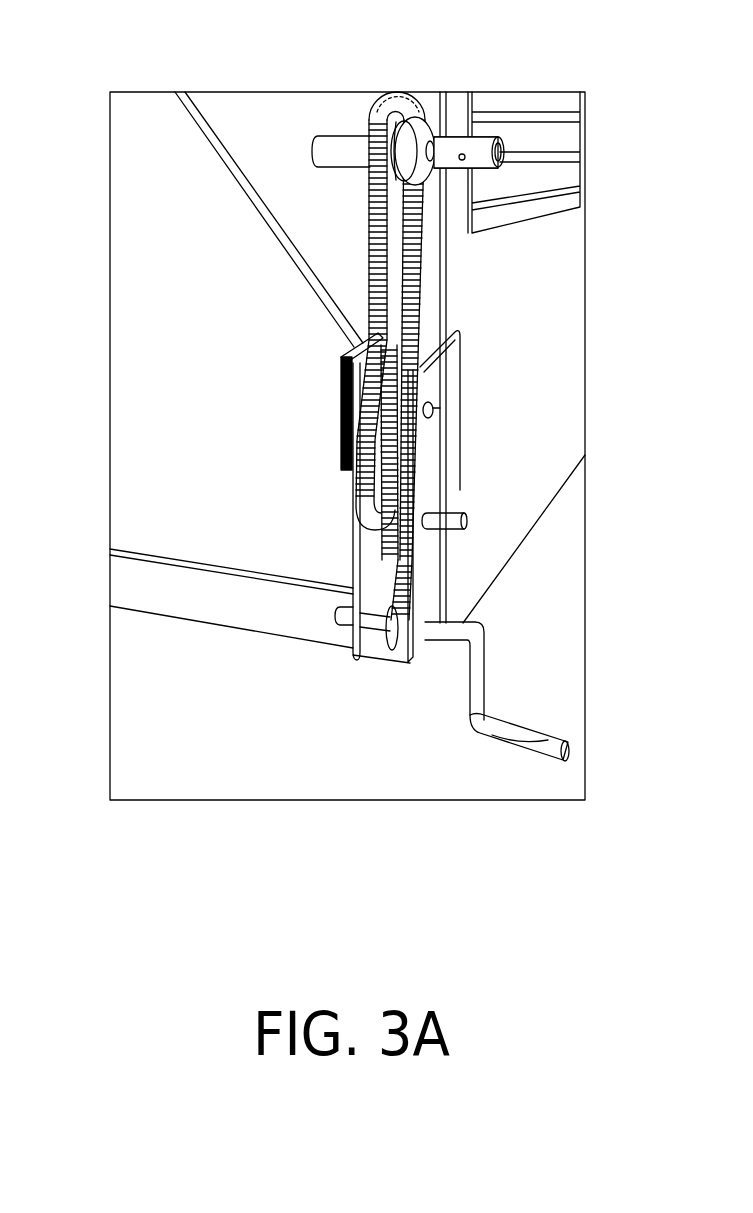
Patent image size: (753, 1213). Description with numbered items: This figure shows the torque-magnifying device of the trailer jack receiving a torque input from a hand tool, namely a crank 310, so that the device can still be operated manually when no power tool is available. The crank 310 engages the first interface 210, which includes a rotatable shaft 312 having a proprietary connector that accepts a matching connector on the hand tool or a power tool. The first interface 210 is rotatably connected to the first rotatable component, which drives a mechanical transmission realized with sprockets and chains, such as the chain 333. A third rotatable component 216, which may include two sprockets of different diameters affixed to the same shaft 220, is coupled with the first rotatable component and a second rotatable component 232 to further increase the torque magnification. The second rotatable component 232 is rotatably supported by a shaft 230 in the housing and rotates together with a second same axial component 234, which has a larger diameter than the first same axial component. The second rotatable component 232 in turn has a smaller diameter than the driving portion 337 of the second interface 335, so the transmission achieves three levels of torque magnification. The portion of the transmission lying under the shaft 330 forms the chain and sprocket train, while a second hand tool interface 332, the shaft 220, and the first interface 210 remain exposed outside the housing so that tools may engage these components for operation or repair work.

The first interface 210 is at (463, 625).
The third rotatable component 216 is at (470, 509).
The shaft 220 is at (468, 520).
The shaft 230 is at (436, 410).
The second rotatable component 232 is at (408, 402).
The second same axial component 234 is at (345, 398).
The crank 310 is at (563, 737).
The rotatable shaft 312 is at (485, 637).
The shaft 330 is at (505, 152).
The second hand tool interface 332 is at (461, 155).
The chain 333 is at (408, 266).
The second interface 335 is at (390, 104).
The driving portion 337 is at (368, 134).